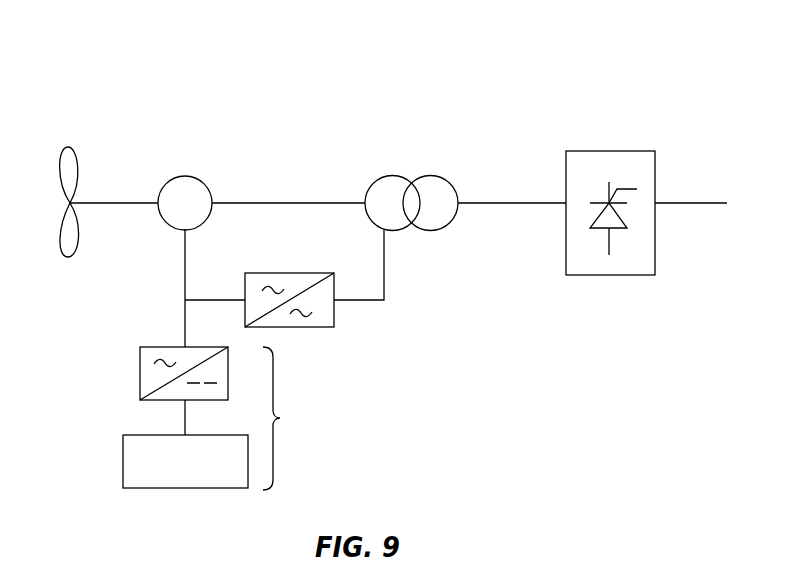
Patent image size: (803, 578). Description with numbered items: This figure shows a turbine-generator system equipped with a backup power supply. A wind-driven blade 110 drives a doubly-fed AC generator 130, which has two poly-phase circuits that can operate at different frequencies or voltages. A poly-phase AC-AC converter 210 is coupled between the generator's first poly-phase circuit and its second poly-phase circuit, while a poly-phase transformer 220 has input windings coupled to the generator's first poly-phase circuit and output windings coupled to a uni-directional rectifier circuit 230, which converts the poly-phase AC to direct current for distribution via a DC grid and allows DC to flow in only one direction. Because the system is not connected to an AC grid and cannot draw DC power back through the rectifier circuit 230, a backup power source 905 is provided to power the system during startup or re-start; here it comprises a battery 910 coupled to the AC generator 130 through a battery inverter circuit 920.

The wind-driven blade 110 is at (75, 255).
The doubly-fed AC generator 130 is at (188, 177).
The poly-phase AC-AC converter 210 is at (334, 313).
The poly-phase transformer 220 is at (437, 230).
The uni-directional rectifier circuit 230 is at (598, 275).
The backup power source 905 is at (292, 418).
The battery 910 is at (123, 450).
The battery inverter circuit 920 is at (140, 362).